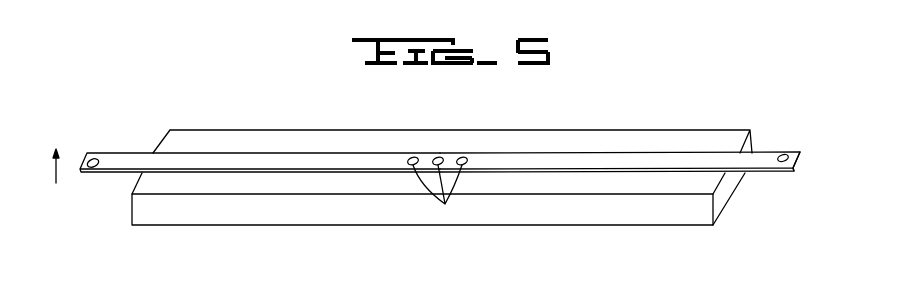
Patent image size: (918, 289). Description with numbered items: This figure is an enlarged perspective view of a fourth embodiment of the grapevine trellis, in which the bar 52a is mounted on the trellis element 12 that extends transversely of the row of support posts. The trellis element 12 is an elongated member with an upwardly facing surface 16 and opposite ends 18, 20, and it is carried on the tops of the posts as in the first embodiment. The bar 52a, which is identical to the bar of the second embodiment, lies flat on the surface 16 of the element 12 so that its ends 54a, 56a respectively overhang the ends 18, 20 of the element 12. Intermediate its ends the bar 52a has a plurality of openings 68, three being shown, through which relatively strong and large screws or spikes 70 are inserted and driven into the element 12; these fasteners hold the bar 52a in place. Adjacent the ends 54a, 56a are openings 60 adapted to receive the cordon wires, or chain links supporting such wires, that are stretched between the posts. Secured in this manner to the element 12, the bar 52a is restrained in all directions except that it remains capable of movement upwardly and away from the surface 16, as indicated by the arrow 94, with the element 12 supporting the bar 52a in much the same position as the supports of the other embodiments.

The trellis element 12 is at (717, 183).
The upwardly facing surface 16 is at (318, 176).
The end of trellis element 18 is at (132, 212).
The end of trellis element 20 is at (717, 214).
The bar 52a is at (723, 155).
The end of bar 54a is at (83, 166).
The end of bar 56a is at (803, 156).
The openings 60 is at (97, 158).
The openings 68 is at (462, 158).
The screws or spikes 70 is at (437, 195).
The arrow 94 is at (56, 183).